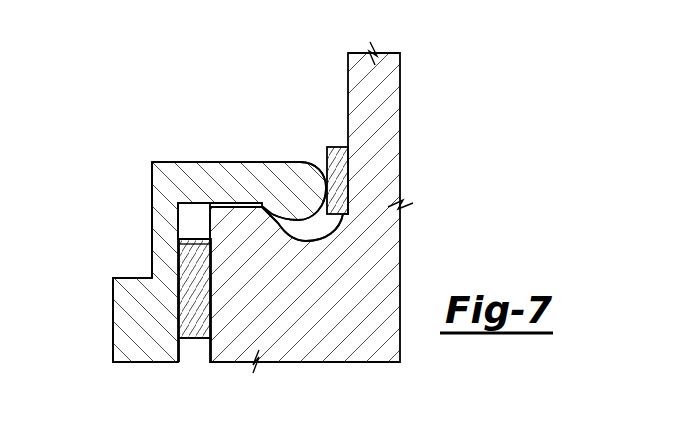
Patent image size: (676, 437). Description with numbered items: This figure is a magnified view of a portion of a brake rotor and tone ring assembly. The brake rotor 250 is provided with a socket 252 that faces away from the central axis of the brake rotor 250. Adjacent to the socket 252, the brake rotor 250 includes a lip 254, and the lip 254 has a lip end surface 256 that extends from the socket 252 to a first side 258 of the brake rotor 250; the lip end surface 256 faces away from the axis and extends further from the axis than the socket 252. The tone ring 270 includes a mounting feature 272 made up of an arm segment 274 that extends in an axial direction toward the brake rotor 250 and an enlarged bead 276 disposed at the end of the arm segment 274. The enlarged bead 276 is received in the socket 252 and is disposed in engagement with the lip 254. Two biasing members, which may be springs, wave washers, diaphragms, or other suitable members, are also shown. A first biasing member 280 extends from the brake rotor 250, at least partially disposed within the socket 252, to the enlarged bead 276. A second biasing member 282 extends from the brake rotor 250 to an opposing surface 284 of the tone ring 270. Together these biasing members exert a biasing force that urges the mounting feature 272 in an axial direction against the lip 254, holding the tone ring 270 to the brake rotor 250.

The brake rotor 250 is at (380, 92).
The socket 252 is at (312, 240).
The lip 254 is at (197, 220).
The lip end surface 256 is at (245, 210).
The first side 258 is at (210, 238).
The tone ring 270 is at (113, 320).
The mounting feature 272 is at (152, 147).
The arm segment 274 is at (232, 160).
The enlarged bead 276 is at (293, 192).
The first biasing member 280 is at (340, 177).
The second biasing member 282 is at (212, 313).
The opposing surface 284 is at (180, 348).